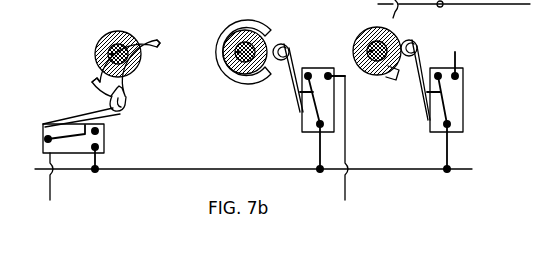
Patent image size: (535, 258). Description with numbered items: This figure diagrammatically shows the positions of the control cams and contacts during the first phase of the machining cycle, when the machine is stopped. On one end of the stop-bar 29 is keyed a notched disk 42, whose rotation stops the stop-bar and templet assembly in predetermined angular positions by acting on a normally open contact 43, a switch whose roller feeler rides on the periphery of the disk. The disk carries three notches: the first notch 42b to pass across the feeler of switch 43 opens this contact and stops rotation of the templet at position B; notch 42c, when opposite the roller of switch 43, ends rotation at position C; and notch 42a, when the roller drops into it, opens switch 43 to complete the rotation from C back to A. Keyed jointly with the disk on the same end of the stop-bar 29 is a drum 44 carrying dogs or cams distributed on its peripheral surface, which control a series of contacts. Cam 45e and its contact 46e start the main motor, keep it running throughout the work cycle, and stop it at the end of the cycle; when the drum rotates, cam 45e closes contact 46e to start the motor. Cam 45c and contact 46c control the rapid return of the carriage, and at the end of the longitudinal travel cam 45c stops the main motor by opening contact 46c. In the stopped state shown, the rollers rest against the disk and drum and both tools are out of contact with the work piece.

The stop-bar 29 is at (128, 55).
The notched disk 42 is at (141, 26).
The notch 42a is at (128, 97).
The first notch 42b is at (161, 44).
The notch 42c is at (93, 80).
The normally open contact 43 is at (106, 137).
The drum 44 is at (104, 32).
The cam 45e is at (263, 28).
The contact 46e is at (306, 110).
The cam 45c is at (389, 78).
The contact 46c is at (460, 115).